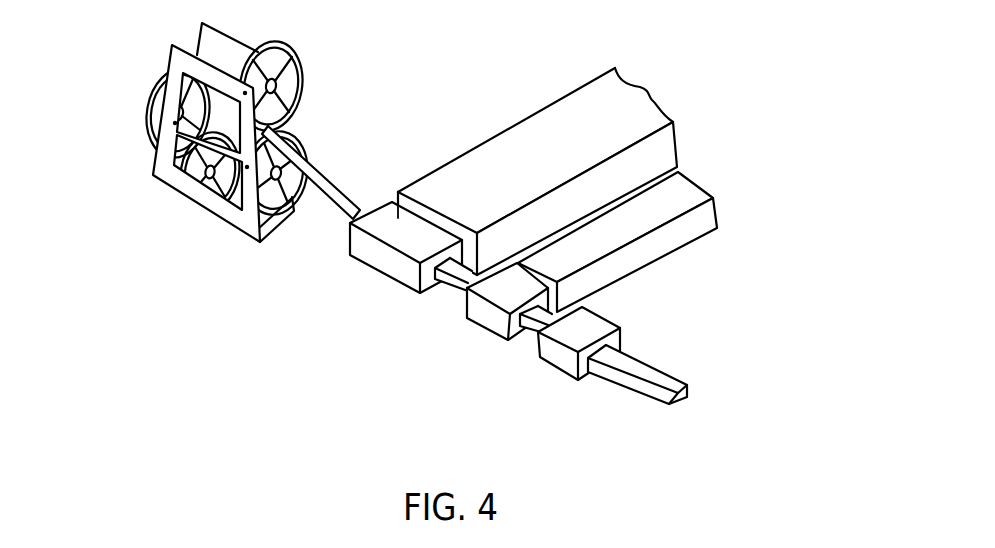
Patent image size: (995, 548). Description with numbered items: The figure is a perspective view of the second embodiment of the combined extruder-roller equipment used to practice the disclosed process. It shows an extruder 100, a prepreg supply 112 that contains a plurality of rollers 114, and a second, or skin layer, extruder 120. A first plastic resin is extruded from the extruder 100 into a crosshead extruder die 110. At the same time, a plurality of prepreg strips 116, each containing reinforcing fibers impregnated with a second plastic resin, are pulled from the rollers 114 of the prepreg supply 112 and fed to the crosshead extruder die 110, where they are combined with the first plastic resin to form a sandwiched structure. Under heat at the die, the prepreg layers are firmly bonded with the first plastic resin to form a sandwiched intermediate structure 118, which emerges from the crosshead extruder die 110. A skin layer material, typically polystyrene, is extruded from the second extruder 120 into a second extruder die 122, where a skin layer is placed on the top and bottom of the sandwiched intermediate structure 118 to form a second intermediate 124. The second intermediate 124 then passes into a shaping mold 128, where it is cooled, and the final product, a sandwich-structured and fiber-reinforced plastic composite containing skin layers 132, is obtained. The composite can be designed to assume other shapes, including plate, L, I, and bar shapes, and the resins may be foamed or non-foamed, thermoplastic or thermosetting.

The extruder 100 is at (565, 122).
The crosshead extruder die 110 is at (375, 253).
The prepreg supply 112 is at (252, 154).
The rollers 114 is at (303, 85).
The prepreg strips 116 is at (318, 172).
The sandwiched intermediate structure 118 is at (462, 290).
The second extruder 120 is at (707, 178).
The second extruder die 122 is at (480, 318).
The second intermediate 124 is at (527, 333).
The shaping mold 128 is at (593, 327).
The sandwich-structured and fiber-reinforced plastic composite containing skin layer 132 is at (653, 375).